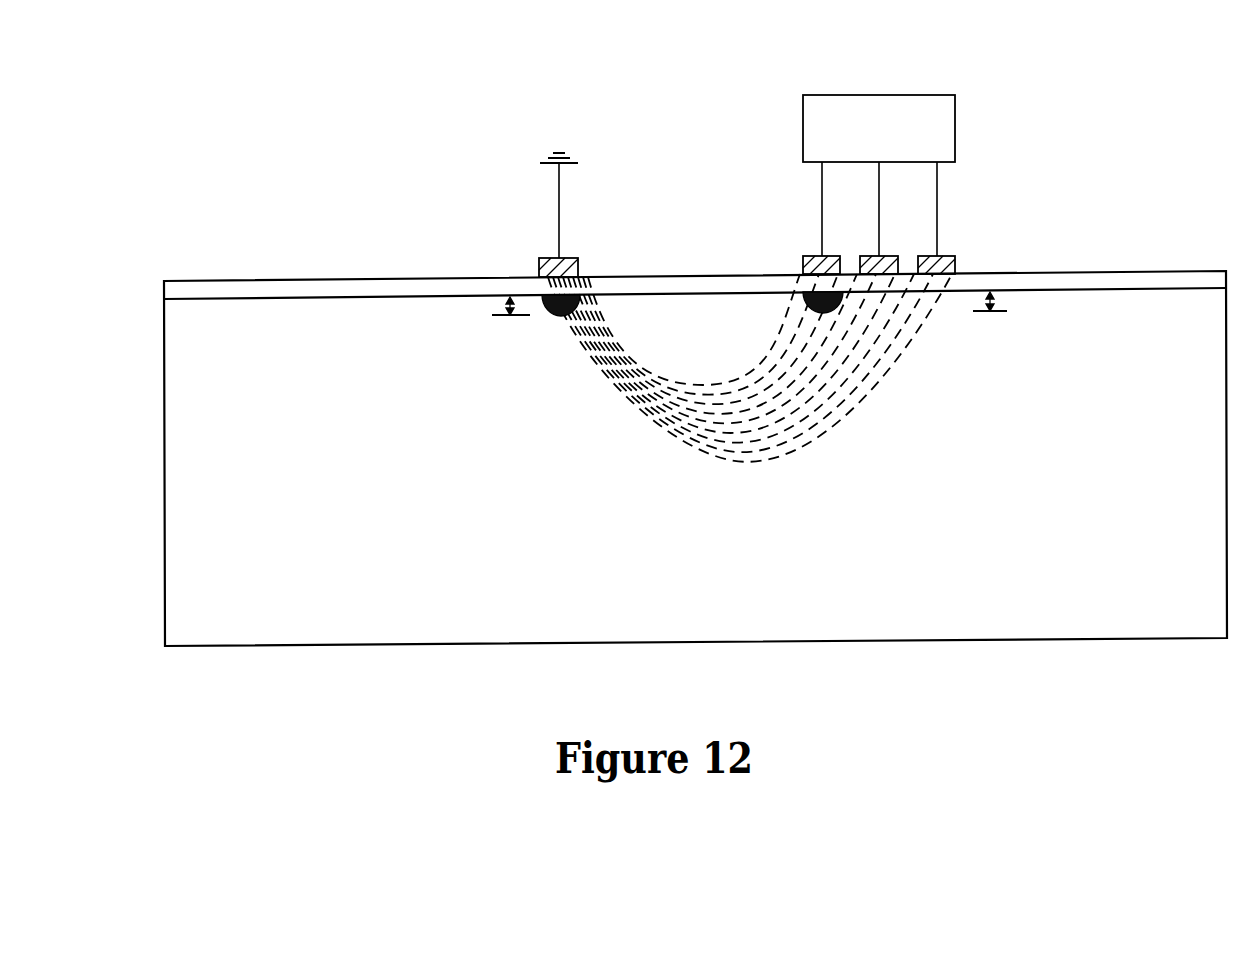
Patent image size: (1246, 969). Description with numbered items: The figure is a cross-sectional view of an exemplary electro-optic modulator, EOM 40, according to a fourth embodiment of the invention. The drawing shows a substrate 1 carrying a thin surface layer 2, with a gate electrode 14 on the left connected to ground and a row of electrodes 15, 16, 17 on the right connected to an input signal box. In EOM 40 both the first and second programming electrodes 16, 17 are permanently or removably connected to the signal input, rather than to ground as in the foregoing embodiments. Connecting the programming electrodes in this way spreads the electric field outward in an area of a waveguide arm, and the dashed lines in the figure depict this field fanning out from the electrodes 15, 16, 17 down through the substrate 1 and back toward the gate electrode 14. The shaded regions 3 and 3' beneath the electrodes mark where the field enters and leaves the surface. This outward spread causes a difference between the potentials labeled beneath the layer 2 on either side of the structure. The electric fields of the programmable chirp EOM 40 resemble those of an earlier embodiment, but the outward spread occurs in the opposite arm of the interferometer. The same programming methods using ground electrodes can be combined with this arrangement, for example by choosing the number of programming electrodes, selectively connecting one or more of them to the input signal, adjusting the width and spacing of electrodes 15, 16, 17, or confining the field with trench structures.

The EOM 40 is at (303, 206).
The substrate 1 is at (190, 432).
The insulating layer 2 is at (178, 290).
The charge / depletion region under gate 3 is at (603, 319).
The charge / depletion region under electrode 3' is at (785, 317).
The gate electrode 14 is at (550, 257).
The electrode 15 is at (818, 255).
The first programming electrode 16 is at (875, 257).
The second programming electrode 17 is at (930, 257).